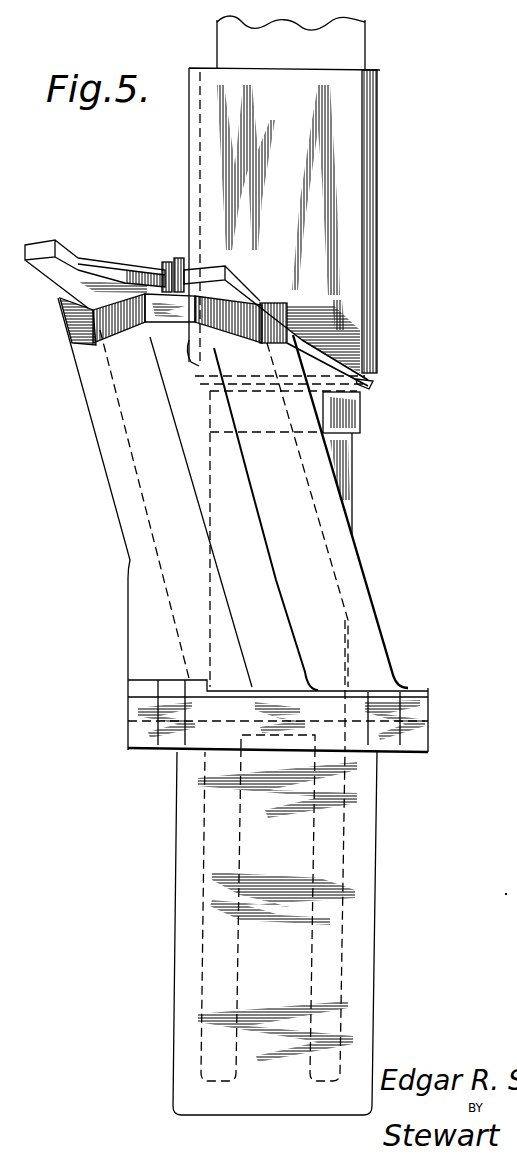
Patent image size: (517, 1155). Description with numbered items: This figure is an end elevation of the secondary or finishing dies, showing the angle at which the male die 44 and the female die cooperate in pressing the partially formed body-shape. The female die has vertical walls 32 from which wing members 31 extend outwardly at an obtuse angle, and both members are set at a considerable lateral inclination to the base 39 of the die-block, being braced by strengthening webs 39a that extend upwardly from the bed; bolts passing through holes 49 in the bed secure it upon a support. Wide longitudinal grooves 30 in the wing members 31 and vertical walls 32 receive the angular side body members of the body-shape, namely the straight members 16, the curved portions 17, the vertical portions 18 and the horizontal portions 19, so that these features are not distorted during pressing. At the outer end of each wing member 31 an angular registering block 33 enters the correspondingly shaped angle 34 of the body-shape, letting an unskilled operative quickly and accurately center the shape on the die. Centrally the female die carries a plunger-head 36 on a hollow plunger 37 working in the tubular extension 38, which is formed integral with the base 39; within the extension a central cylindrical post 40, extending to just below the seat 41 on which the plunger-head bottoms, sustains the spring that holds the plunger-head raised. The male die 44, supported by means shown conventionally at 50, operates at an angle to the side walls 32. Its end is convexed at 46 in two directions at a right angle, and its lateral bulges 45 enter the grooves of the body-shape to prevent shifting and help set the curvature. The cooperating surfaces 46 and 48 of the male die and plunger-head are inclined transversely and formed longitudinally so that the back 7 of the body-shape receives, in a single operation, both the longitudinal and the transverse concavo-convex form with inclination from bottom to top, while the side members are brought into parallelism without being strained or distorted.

The supporting means 50 is at (348, 46).
The male die 44 is at (352, 180).
The lateral bulges 45 is at (340, 350).
The convexed face 46 is at (372, 379).
The back 7 is at (366, 387).
The plunger-head 36 is at (360, 430).
The hollow plunger 37 is at (350, 490).
The cooperating surface of plunger-head 48 is at (320, 410).
The straight members 16 is at (46, 248).
The curved portions 17 is at (100, 258).
The registering block 33 is at (164, 268).
The angle of body-shape 34 is at (176, 268).
The vertical portions 18 is at (210, 272).
The horizontal portions 19 is at (250, 293).
The wing members 31 is at (135, 330).
The longitudinal grooves 30 is at (130, 465).
The vertical walls 32 is at (125, 518).
The strengthening webs 39a is at (190, 460).
The base 39 is at (425, 742).
The bolt holes 49 is at (150, 720).
The seat 41 is at (233, 746).
The central cylindrical post 40 is at (235, 838).
The tubular extension 38 is at (180, 868).